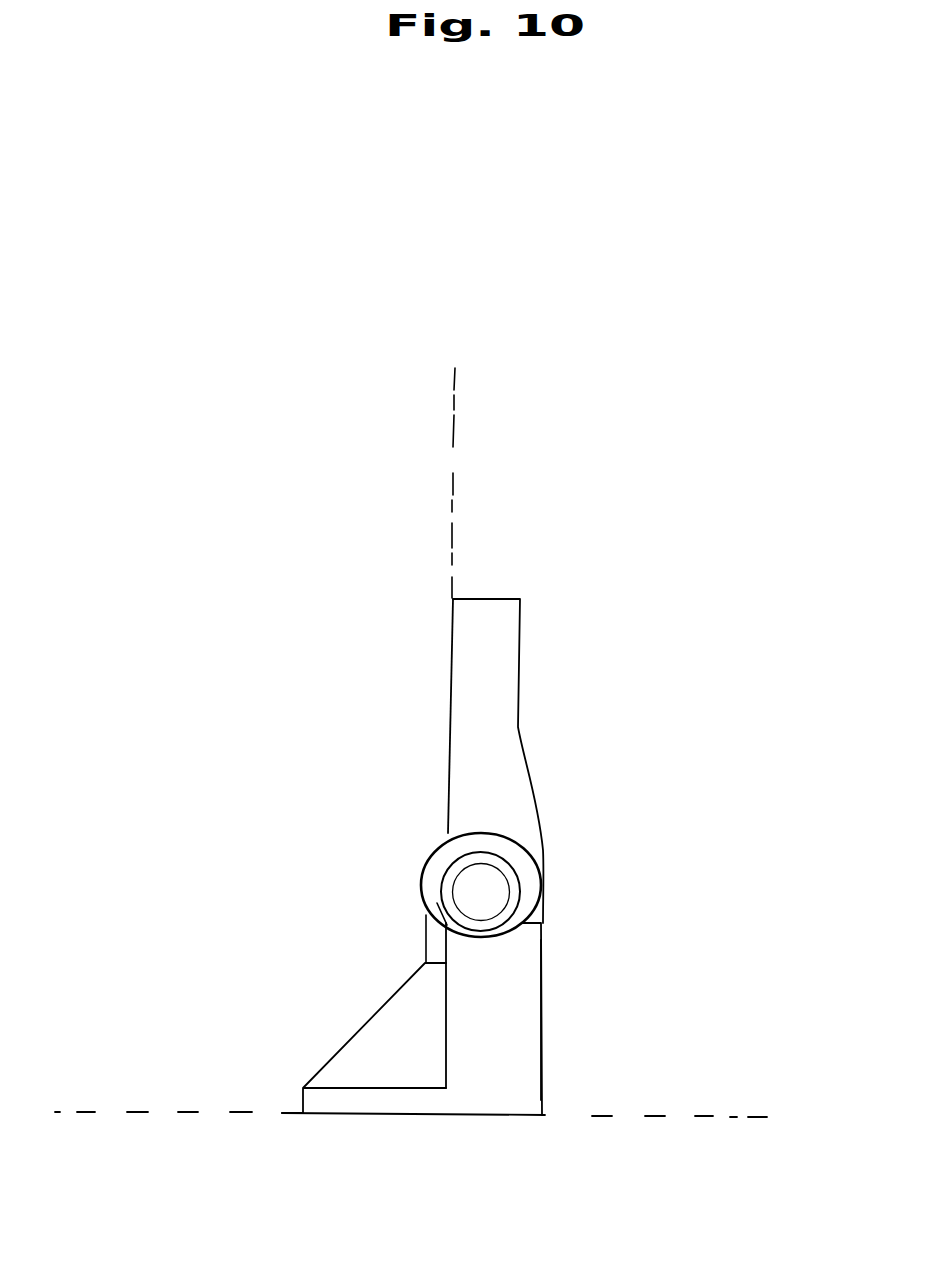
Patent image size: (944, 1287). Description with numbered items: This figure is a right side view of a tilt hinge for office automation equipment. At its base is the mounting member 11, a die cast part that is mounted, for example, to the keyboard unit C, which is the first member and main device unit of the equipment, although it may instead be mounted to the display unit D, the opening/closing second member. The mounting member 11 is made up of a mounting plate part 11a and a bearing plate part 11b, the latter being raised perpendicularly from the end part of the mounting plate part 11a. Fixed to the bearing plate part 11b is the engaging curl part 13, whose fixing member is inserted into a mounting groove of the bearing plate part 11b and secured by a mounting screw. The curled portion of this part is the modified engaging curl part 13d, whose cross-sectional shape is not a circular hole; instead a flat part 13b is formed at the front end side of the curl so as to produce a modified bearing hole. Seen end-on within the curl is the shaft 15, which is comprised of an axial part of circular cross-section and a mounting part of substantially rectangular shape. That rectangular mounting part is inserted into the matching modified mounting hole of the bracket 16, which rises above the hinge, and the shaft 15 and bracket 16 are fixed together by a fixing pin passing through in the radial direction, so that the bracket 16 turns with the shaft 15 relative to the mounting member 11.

The mounting member 11 is at (543, 1037).
The mounting plate part 11a is at (387, 1088).
The bearing plate part 11b is at (538, 983).
The engaging curl part 13 is at (504, 833).
The flat part 13b is at (433, 918).
The modified engaging curl part 13d is at (435, 868).
The shaft 15 is at (492, 891).
The bracket 16 is at (520, 688).
The keyboard unit C is at (622, 1118).
The display unit D is at (453, 471).